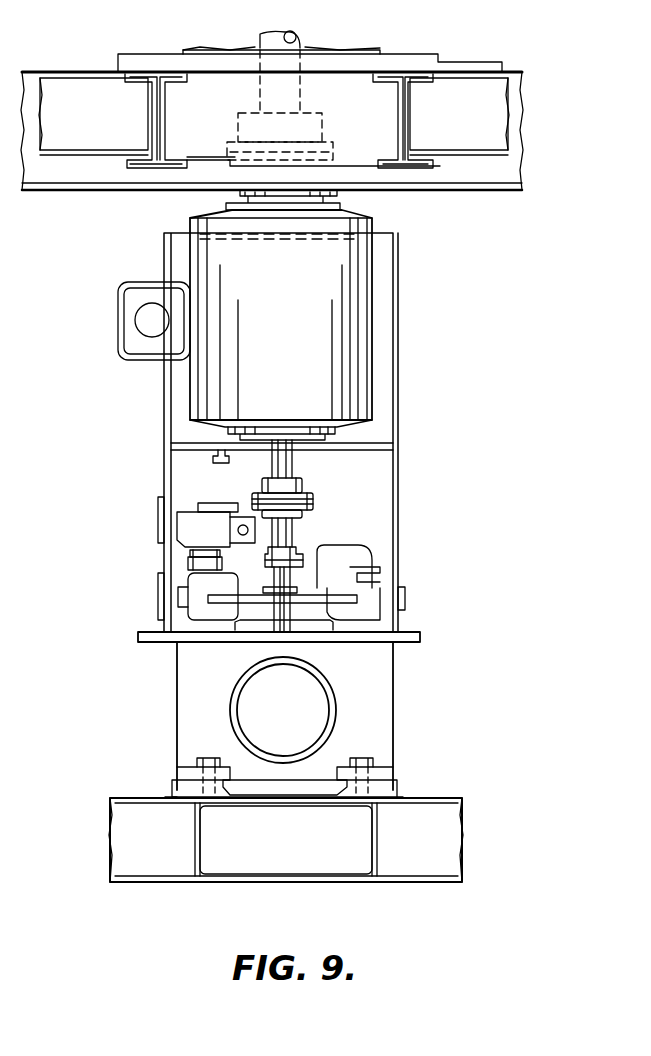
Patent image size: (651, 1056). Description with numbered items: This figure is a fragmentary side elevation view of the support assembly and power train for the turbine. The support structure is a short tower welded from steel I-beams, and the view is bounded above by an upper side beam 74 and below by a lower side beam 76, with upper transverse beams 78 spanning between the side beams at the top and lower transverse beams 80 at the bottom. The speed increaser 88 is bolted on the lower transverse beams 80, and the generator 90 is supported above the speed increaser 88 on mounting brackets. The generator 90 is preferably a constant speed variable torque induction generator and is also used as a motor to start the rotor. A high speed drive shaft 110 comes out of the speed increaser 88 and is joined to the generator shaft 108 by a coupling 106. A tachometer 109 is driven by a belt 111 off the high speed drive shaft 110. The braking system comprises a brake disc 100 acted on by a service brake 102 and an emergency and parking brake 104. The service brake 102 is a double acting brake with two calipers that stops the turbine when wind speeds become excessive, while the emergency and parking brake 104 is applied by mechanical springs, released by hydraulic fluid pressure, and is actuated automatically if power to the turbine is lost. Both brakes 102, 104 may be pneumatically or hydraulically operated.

The upper side beam 74 is at (518, 72).
The lower side beam 76 is at (447, 835).
The upper transverse beam 78 is at (152, 112).
The lower transverse beam 80 is at (195, 835).
The speed increaser 88 is at (395, 670).
The generator 90 is at (372, 318).
The brake disc 100 is at (363, 553).
The service brake 102 is at (188, 572).
The emergency and parking brake 104 is at (380, 568).
The coupling 106 is at (315, 497).
The generator shaft 108 is at (378, 460).
The tachometer 109 is at (200, 523).
The high speed drive shaft 110 is at (293, 533).
The belt 111 is at (188, 565).